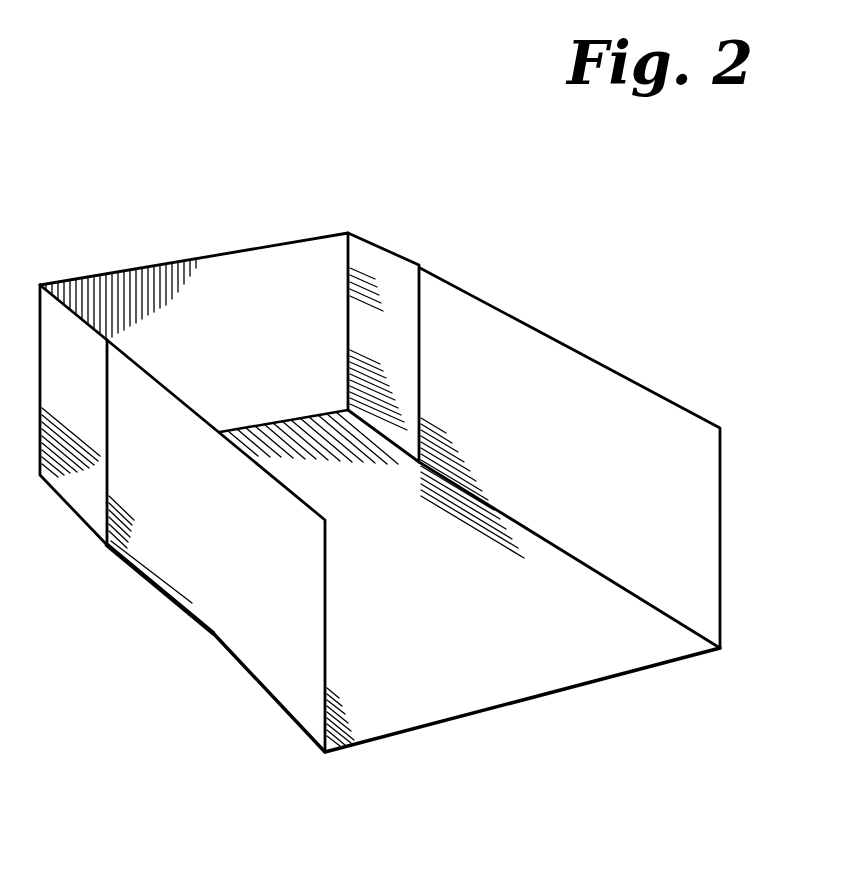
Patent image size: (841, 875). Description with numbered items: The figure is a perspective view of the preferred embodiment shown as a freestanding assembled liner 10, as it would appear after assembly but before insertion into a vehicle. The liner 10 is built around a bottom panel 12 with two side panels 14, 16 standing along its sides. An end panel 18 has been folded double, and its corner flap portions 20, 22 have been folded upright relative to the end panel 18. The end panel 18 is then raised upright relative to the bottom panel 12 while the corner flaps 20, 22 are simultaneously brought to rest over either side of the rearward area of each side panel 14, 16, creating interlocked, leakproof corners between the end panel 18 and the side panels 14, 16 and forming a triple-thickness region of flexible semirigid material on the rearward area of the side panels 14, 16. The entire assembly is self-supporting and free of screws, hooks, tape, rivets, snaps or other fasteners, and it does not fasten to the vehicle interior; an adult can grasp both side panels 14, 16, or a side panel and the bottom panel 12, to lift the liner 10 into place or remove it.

The liner 10 is at (285, 727).
The bottom panel 12 is at (445, 631).
The side panel 14 is at (225, 541).
The side panel 16 is at (628, 468).
The end panel 18 is at (224, 339).
The corner flap portion 20 is at (74, 413).
The corner flap portion 22 is at (395, 343).